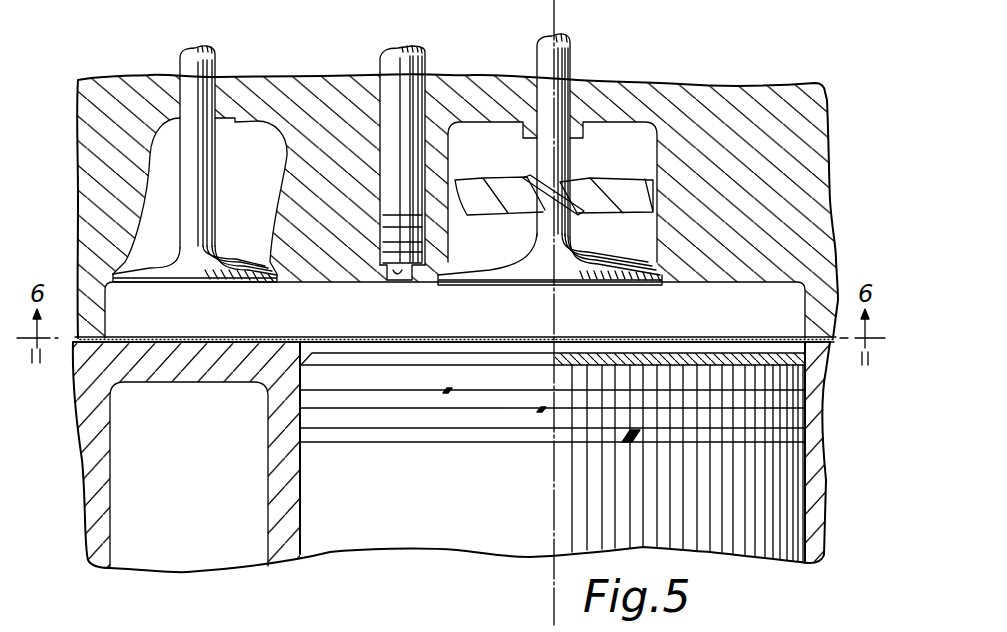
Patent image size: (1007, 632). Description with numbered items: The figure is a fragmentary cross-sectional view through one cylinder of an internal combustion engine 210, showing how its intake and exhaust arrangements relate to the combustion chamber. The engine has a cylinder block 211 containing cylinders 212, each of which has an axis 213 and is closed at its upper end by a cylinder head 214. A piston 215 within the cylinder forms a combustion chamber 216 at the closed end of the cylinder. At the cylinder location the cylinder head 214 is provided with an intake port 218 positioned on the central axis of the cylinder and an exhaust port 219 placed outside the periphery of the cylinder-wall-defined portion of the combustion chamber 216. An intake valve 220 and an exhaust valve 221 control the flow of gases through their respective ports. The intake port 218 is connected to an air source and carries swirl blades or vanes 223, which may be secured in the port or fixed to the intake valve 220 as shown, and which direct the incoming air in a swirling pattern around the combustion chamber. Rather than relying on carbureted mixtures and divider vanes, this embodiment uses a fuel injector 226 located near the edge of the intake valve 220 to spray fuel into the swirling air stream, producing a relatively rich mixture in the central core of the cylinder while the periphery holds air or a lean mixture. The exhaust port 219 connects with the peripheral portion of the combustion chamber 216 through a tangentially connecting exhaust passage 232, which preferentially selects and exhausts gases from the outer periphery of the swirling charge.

The internal combustion engine 210 is at (822, 72).
The cylinder block 211 is at (817, 444).
The cylinders 212 is at (800, 505).
The axes 213 is at (554, 302).
The cylinder head 214 is at (820, 157).
The pistons 215 is at (490, 541).
The combustion chambers 216 is at (793, 300).
The intake port 218 is at (650, 120).
The exhaust port 219 is at (257, 133).
The intake valve 220 is at (572, 50).
The exhaust valve 221 is at (213, 60).
The swirl blades or vanes 223 is at (560, 205).
The fuel injector 226 is at (413, 65).
The exhaust passage 232 is at (253, 318).